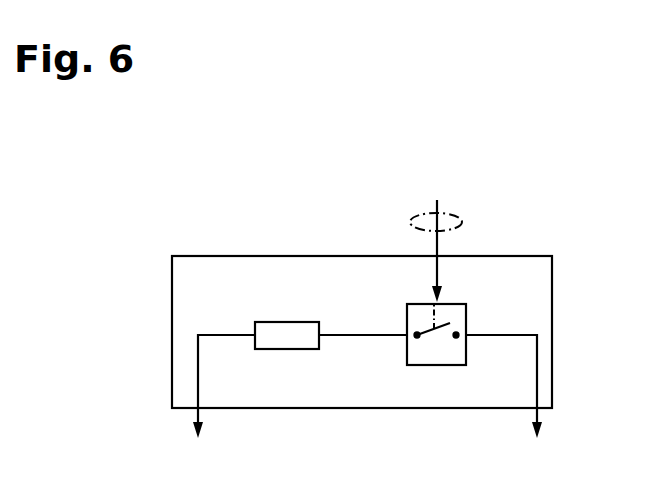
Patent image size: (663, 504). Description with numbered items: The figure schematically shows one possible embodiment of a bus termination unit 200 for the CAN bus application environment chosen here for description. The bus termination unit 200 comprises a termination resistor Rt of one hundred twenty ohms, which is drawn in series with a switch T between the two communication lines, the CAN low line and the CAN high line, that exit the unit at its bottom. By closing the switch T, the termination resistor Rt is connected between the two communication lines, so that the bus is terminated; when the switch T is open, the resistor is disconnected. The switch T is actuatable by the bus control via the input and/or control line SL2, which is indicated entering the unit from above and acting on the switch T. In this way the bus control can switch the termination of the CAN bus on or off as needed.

The bus termination unit 200 is at (228, 292).
The termination resistor Rt is at (287, 357).
The switch T is at (436, 285).
The input and/or control line SL2 is at (462, 220).